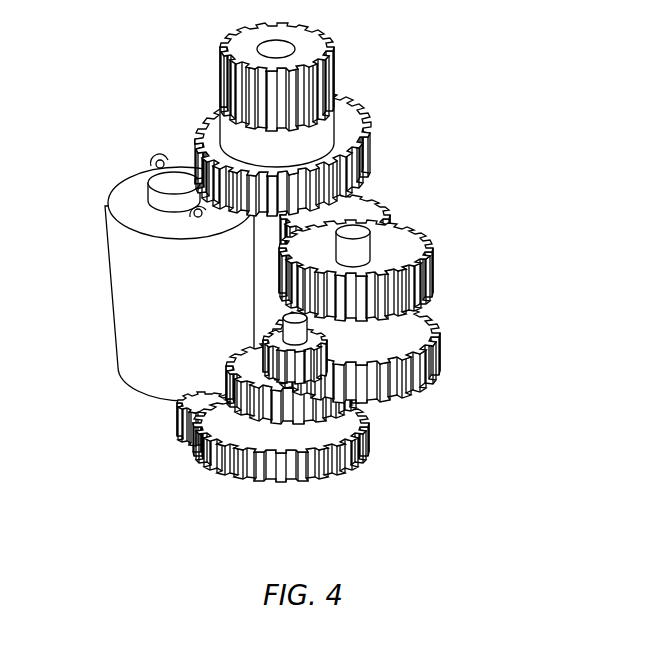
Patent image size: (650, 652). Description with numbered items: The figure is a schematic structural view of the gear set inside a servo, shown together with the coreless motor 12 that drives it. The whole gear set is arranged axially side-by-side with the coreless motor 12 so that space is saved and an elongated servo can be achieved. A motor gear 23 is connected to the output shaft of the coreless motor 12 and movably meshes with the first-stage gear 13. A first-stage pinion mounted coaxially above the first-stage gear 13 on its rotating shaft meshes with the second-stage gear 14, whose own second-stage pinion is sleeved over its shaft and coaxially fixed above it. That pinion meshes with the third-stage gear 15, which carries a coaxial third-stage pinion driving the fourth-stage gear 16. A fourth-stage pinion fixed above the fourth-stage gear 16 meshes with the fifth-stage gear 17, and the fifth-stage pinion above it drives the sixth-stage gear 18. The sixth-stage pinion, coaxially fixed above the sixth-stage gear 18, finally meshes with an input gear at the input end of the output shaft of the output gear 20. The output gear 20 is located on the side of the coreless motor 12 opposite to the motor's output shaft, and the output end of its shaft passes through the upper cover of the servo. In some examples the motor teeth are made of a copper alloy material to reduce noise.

The coreless motor 12 is at (138, 350).
The first-stage gear 13 is at (200, 458).
The second-stage gear 14 is at (323, 445).
The third-stage gear 15 is at (408, 368).
The fourth-stage gear 16 is at (330, 380).
The fifth-stage gear 17 is at (410, 305).
The sixth-stage gear 18 is at (392, 222).
The output gear 20 is at (380, 143).
The motor gear 23 is at (175, 422).